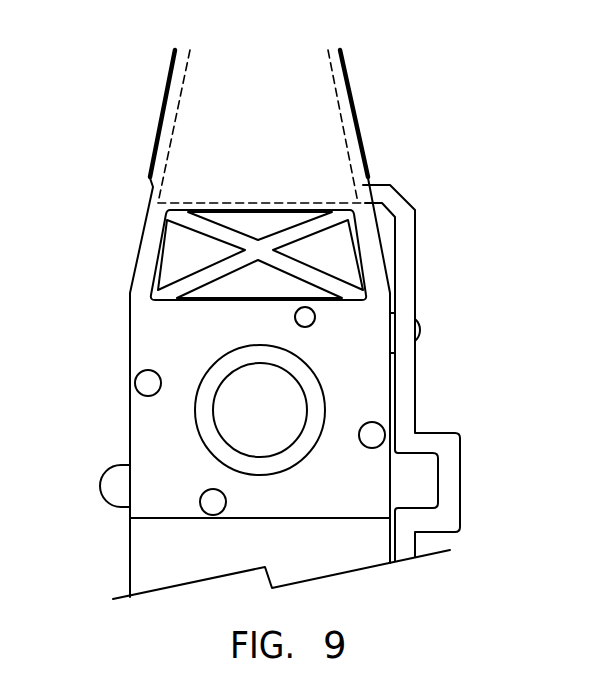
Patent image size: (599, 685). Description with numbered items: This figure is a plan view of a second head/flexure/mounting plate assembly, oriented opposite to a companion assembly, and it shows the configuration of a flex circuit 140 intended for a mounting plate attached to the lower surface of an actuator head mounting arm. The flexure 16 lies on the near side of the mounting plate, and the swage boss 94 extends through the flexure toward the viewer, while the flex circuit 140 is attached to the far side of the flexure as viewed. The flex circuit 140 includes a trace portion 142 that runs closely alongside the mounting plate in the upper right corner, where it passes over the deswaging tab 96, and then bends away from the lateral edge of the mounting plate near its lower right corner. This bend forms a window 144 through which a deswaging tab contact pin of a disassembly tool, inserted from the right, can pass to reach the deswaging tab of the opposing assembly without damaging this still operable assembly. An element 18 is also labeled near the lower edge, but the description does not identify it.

The flexure 16 is at (162, 112).
The flex circuit 140 is at (203, 158).
The trace portion 142 is at (407, 257).
The window 144 is at (420, 480).
The swage boss 94 is at (195, 410).
The deswaging tab 96 is at (120, 487).
The base 18 is at (152, 550).